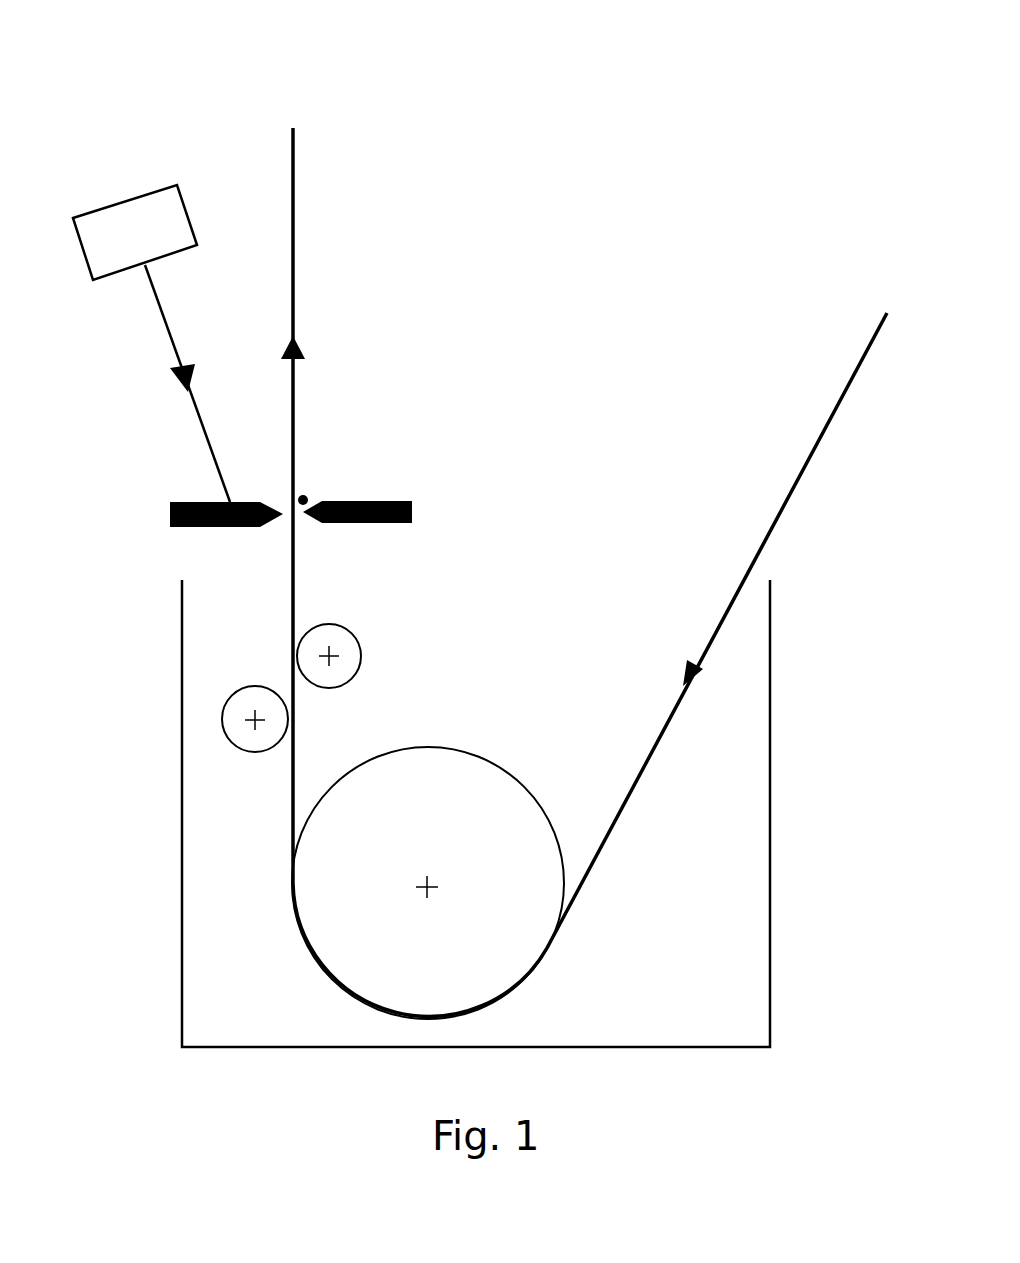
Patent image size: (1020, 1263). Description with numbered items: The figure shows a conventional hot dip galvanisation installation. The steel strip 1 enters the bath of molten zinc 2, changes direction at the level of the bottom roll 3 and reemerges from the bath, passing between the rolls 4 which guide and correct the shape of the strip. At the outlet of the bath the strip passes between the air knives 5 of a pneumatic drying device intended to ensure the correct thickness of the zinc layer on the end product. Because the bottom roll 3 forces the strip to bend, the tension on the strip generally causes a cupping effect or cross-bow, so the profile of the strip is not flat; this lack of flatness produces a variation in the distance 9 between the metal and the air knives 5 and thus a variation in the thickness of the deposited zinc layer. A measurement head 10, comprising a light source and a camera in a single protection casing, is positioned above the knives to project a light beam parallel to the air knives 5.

The steel strip 1 is at (290, 201).
The bath of molten zinc 2 is at (697, 933).
The bottom roll 3 is at (367, 938).
The rolls 4 is at (307, 654).
The air knives 5 is at (170, 514).
The distance 9 is at (303, 500).
The measurement head 10 is at (133, 229).